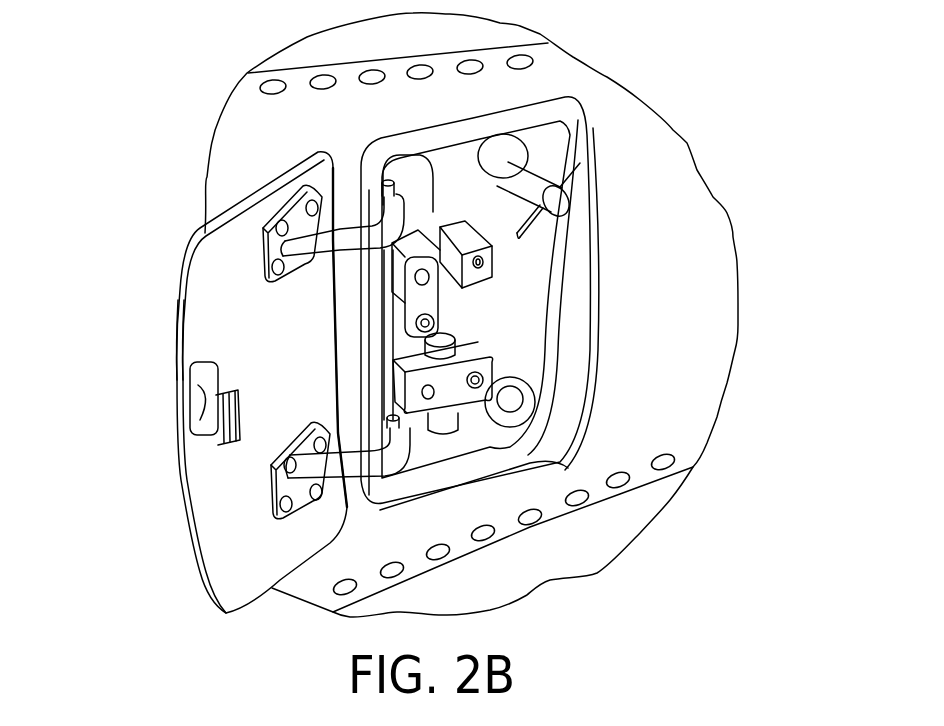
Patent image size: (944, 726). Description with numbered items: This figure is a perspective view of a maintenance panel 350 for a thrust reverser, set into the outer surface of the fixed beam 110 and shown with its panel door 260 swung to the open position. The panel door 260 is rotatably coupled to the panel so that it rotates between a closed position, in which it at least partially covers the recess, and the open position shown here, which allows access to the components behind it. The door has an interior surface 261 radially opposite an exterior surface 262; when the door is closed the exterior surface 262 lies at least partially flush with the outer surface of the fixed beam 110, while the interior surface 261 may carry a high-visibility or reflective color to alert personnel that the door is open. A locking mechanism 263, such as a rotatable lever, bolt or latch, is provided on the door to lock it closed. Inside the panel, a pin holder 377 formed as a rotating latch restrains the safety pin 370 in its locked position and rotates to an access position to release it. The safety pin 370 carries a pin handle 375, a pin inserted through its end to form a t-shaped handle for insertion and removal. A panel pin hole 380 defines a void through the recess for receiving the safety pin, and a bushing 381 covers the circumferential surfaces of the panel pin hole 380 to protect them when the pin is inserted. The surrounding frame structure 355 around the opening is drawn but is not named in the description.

The fixed beam 110 is at (698, 337).
The panel door 260 is at (206, 271).
The interior surface 261 is at (195, 313).
The exterior surface 262 is at (179, 345).
The locking mechanism 263 is at (191, 385).
The maintenance panel 350 is at (718, 76).
The frame 355 is at (536, 270).
The safety pin 370 is at (545, 190).
The pin handle 375 is at (560, 178).
The pin holder 377 is at (433, 178).
The panel pin hole 380 is at (483, 168).
The bushing 381 is at (520, 156).